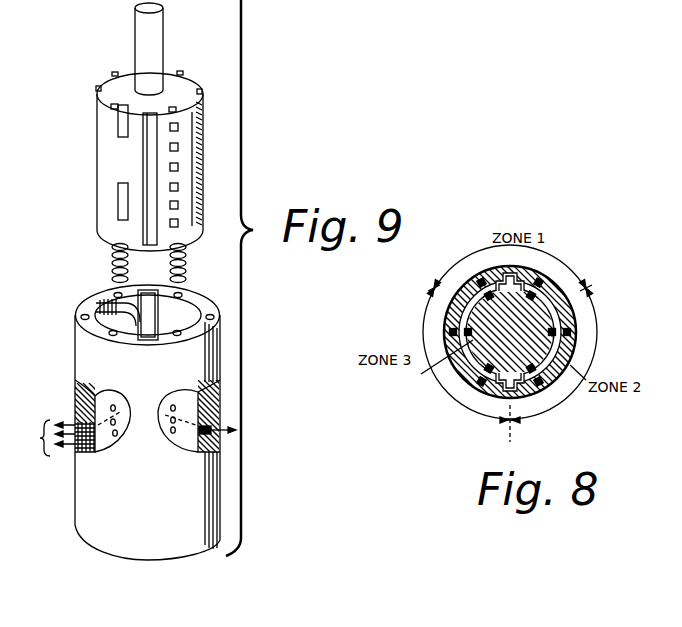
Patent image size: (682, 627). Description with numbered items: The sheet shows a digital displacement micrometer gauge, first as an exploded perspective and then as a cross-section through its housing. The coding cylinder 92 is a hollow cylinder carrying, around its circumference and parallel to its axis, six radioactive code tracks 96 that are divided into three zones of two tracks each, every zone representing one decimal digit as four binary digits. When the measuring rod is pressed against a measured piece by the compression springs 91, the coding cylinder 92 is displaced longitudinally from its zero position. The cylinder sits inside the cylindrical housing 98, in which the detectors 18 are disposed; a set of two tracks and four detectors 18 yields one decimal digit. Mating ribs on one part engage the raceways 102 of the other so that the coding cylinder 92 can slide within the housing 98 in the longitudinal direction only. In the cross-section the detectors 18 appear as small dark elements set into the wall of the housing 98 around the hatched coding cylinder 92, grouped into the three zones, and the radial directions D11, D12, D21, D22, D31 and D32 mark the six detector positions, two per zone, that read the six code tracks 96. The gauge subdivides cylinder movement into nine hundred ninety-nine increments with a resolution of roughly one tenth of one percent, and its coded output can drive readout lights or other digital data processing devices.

In FIG. 9, the detectors 18 is at (82, 455).
In FIG. 8, the detectors 18 is at (466, 331).
In FIG. 9, the compression springs 91 is at (172, 267).
In FIG. 9, the coding cylinder 92 is at (97, 120).
In FIG. 8, the coding cylinder 92 is at (555, 318).
In FIG. 9, the radioactive code tracks 96 is at (172, 203).
In FIG. 8, the radioactive code tracks 96 is at (497, 380).
In FIG. 9, the cylindrical housing 98 is at (85, 370).
In FIG. 8, the cylindrical housing 98 is at (568, 292).
In FIG. 9, the raceways 102 is at (96, 306).
In FIG. 8, the direction D11 is at (489, 296).
In FIG. 8, the direction D12 is at (531, 296).
In FIG. 8, the direction D21 is at (570, 332).
In FIG. 8, the direction D22 is at (531, 368).
In FIG. 8, the direction D31 is at (489, 368).
In FIG. 8, the direction D32 is at (452, 332).